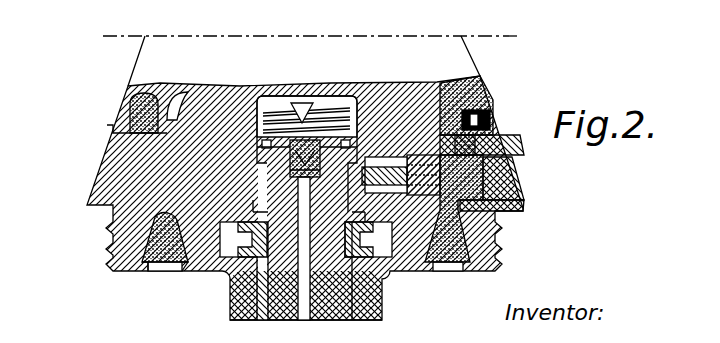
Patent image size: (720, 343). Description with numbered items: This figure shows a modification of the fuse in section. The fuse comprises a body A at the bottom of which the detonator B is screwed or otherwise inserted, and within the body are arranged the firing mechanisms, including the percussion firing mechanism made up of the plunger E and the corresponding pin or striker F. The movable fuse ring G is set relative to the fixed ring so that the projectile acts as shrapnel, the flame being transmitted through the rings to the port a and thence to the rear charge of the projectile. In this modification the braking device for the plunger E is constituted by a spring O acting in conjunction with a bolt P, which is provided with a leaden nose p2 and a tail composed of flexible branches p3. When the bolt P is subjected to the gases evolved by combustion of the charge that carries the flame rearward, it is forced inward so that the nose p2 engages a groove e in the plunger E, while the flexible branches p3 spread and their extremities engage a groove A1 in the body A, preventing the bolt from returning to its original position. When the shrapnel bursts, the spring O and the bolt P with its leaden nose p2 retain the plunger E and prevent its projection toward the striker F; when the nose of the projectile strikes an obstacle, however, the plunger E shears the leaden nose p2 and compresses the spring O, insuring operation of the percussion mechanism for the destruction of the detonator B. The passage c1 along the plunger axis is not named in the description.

The body A is at (128, 215).
The groove A1 is at (484, 92).
The movable fuse ring G is at (122, 105).
The groove e is at (362, 170).
The port a is at (158, 267).
The plunger E is at (272, 299).
The detonator B is at (365, 313).
The passage c1 is at (303, 278).
The pin F is at (303, 110).
The spring O is at (323, 113).
The leaden nose p2 is at (408, 155).
The bolt P is at (436, 97).
The flexible branches p3 is at (513, 176).